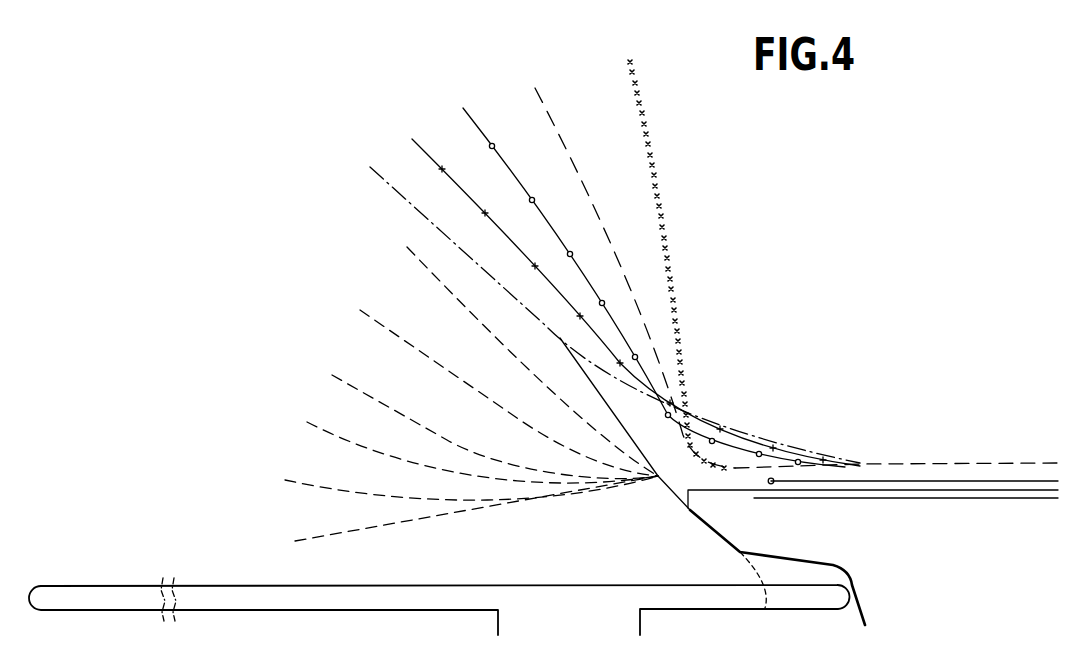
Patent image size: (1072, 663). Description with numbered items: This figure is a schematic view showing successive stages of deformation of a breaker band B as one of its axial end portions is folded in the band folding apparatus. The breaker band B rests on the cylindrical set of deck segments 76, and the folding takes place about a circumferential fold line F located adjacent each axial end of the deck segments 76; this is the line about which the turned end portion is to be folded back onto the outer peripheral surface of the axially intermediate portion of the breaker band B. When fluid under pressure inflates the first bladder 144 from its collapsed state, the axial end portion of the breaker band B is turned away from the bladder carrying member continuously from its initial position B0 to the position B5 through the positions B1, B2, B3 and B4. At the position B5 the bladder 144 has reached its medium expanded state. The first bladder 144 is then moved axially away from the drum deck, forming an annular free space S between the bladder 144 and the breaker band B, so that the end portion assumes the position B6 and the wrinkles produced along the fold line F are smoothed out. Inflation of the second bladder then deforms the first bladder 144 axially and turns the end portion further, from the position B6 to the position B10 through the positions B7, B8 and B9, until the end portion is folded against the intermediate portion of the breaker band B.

The initial position of breaker band axial end portion B0 is at (317, 537).
The intermediate position of breaker band end portion B1 is at (297, 480).
The intermediate position of breaker band end portion B2 is at (304, 420).
The intermediate position of breaker band end portion B3 is at (329, 373).
The intermediate position of breaker band end portion B4 is at (359, 309).
The position of breaker band end portion at medium expanded state B5 is at (407, 245).
The position of breaker band end portion after bladder withdrawal B6 is at (386, 182).
The intermediate position of breaker band end portion B7 is at (424, 146).
The intermediate position of breaker band end portion B8 is at (474, 120).
The intermediate position of breaker band end portion B9 is at (541, 95).
The final turned position of breaker band end portion B10 is at (637, 72).
The breaker band B is at (966, 462).
The annular free space S is at (668, 455).
The circumferential fold line F is at (657, 480).
The deck segments 76 is at (888, 544).
The first bladder 144 is at (121, 586).